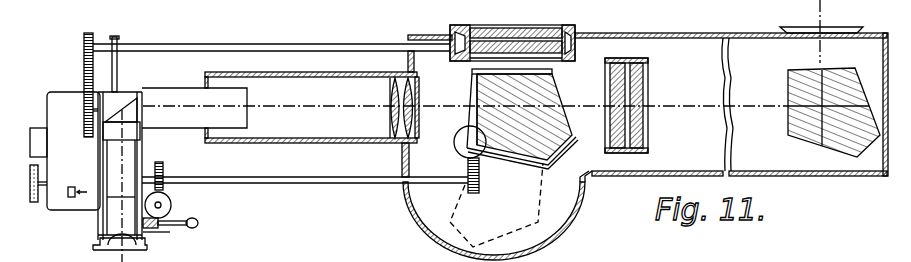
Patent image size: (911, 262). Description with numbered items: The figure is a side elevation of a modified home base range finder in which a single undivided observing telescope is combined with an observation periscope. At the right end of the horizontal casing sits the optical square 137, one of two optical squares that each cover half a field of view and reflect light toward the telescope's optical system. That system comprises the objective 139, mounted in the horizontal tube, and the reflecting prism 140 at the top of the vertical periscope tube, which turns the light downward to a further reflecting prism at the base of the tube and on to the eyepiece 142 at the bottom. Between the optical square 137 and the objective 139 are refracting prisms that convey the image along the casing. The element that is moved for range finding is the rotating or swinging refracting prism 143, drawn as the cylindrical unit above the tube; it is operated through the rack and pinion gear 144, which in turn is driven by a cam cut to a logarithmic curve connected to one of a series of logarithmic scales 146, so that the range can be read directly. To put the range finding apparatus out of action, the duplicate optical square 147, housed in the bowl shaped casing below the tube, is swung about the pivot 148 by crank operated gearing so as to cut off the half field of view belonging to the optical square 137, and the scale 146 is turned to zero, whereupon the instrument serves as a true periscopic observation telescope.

The optical square 137 is at (813, 142).
The objective 139 is at (392, 101).
The reflecting prism 140 is at (118, 108).
The eyepiece 142 is at (97, 248).
The refracting prism 143 is at (527, 15).
The rack and pinion gear 144 is at (84, 82).
The logarithmic scale 146 is at (71, 197).
The optical square 147 is at (585, 201).
The pivot 148 is at (455, 149).